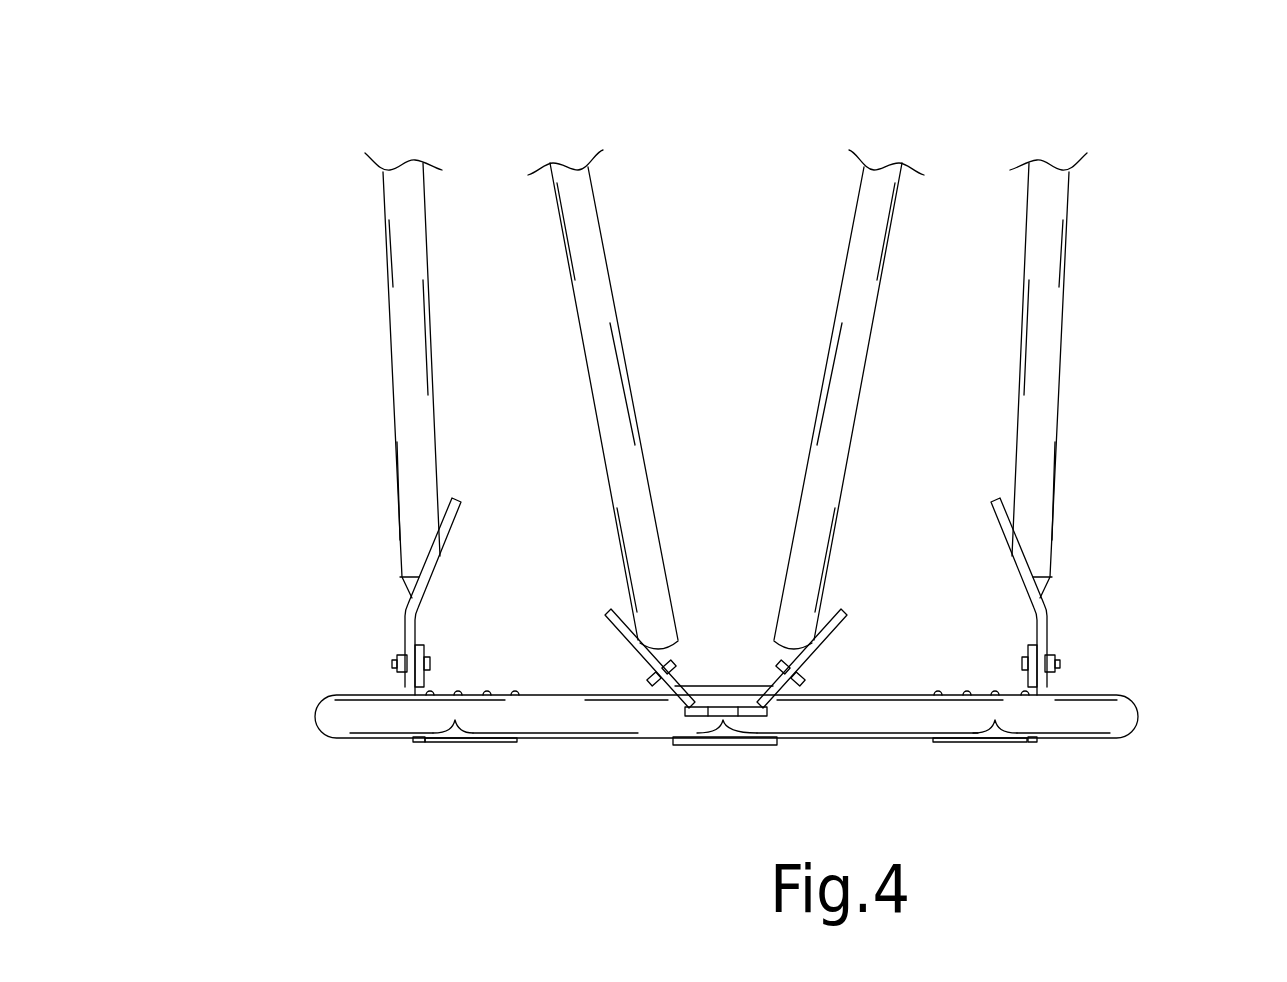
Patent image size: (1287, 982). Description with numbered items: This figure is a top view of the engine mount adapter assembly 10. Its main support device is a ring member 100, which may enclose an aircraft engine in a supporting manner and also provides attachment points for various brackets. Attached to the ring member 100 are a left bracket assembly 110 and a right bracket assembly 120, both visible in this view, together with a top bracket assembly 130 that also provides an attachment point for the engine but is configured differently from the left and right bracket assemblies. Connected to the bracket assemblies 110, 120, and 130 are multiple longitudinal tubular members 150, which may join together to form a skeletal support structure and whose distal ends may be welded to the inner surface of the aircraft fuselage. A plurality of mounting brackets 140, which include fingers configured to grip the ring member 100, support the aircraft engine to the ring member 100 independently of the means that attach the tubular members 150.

The engine mount adapter assembly 10 is at (1141, 143).
The ring member 100 is at (347, 718).
The left bracket assembly 110 is at (407, 630).
The right bracket assembly 120 is at (1047, 630).
The top bracket assembly 130 is at (742, 695).
The mounting bracket 140 is at (456, 730).
The tubular member 150 is at (405, 197).